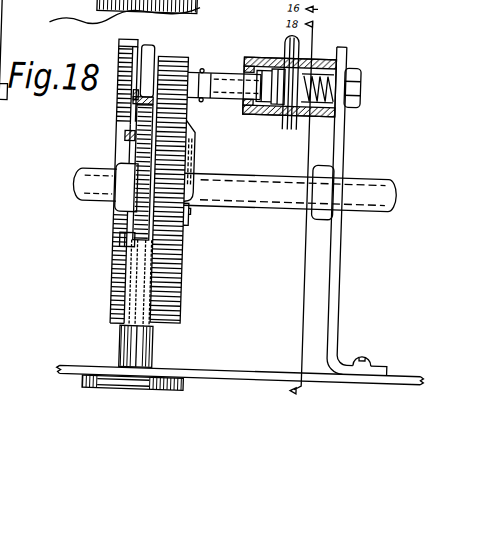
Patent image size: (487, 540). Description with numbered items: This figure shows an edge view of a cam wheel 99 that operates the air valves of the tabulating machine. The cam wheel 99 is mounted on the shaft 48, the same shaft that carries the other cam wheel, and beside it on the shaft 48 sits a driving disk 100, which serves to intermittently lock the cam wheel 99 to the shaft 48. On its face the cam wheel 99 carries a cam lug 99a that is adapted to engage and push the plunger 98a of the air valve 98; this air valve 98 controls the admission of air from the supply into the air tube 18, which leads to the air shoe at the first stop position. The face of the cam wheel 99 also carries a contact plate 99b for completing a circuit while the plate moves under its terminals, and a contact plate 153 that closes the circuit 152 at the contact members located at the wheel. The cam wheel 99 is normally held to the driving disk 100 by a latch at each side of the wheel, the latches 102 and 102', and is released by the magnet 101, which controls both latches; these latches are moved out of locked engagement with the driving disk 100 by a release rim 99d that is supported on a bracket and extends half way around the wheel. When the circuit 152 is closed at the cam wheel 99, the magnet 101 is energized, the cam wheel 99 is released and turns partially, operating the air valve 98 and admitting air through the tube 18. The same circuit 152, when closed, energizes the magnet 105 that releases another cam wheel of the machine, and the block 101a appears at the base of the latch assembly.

The air tube 18 is at (280, 44).
The shaft 48 is at (87, 172).
The air valve 98 is at (309, 63).
The plunger 98a is at (220, 101).
The cam wheel 99 is at (179, 254).
The cam lug 99a is at (191, 146).
The contact plate 99b is at (186, 229).
The release rim 99d is at (121, 237).
The driving disk 100 is at (144, 161).
The magnet 101 is at (189, 389).
The support block 101a is at (153, 350).
The latch 102 is at (102, 223).
The latch 102' is at (108, 81).
The magnet 105 is at (94, 7).
The circuit 152 is at (36, 394).
The contact plate 153 is at (189, 155).